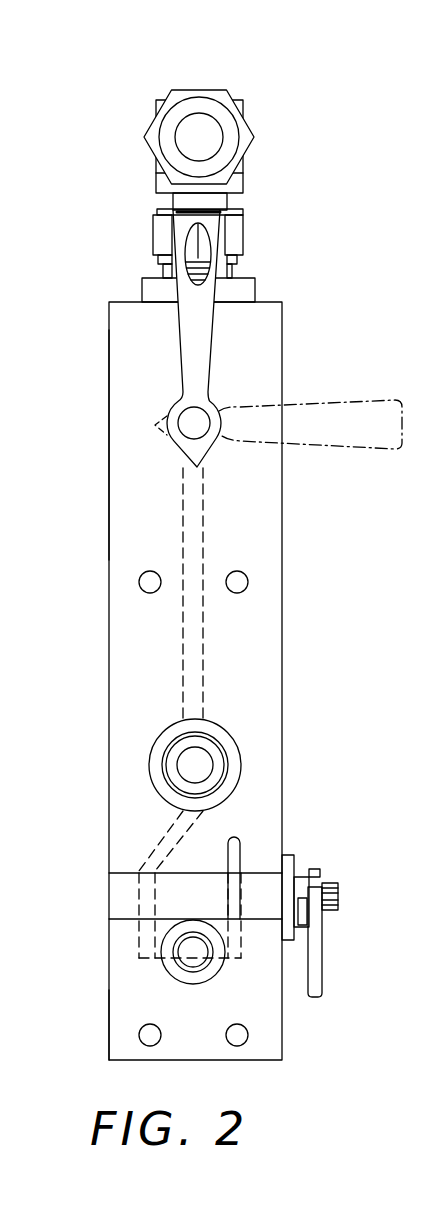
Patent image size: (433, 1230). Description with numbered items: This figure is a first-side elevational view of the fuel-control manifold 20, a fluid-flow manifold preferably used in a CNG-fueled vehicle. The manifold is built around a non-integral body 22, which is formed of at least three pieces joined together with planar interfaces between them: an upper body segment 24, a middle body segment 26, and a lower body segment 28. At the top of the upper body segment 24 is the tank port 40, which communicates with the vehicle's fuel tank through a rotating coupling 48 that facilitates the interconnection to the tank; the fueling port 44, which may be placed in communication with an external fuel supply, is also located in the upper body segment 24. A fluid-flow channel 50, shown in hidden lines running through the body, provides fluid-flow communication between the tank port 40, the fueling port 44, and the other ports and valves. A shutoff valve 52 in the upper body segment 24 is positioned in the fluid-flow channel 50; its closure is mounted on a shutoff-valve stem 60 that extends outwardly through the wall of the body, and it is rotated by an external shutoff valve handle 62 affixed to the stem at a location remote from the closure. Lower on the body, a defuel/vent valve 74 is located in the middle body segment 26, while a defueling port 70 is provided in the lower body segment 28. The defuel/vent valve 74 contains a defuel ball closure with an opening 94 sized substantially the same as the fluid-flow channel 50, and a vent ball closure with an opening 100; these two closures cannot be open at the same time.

The fuel-control manifold 20 is at (133, 84).
The non-integral body 22 is at (104, 338).
The upper body segment 24 is at (109, 445).
The middle body segment 26 is at (109, 882).
The lower body segment 28 is at (109, 1005).
The tank port 40 is at (158, 277).
The fueling port 44 is at (160, 735).
The rotating coupling 48 is at (236, 212).
The fluid-flow channel 50 is at (183, 533).
The shutoff valve 52 is at (238, 452).
The shutoff-valve stem 60 is at (192, 428).
The shutoff valve handle 62 is at (216, 320).
The defueling port 70 is at (216, 975).
The defuel/vent valve 74 is at (352, 893).
The opening 94 is at (137, 910).
The opening 100 is at (243, 883).